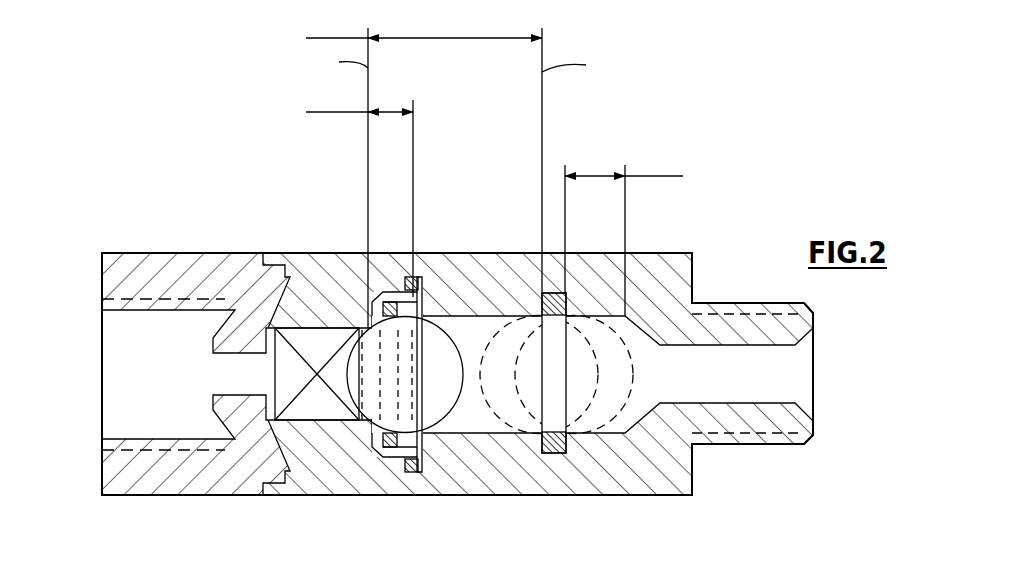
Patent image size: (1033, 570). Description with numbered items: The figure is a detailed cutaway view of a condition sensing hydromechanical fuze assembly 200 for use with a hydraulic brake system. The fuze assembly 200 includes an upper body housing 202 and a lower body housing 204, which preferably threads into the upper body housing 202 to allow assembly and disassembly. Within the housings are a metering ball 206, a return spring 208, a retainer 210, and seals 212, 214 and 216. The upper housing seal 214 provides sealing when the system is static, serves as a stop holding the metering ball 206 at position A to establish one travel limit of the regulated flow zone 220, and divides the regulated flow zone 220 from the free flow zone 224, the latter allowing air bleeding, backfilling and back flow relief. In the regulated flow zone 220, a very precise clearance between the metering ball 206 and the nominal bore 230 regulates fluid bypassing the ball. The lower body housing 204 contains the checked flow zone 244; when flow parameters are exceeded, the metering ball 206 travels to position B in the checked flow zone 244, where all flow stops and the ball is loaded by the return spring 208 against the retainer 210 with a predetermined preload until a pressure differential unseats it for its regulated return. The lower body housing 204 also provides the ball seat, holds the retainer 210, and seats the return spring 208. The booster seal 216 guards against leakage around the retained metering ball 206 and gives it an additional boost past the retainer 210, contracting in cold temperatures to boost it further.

The fuze assembly 200 is at (728, 112).
The upper body housing 202 is at (673, 495).
The lower body housing 204 is at (158, 495).
The metering ball 206 is at (462, 408).
The return spring 208 is at (328, 359).
The retainer 210 is at (420, 335).
The seal 212 is at (412, 472).
The upper housing seal 214 is at (567, 453).
The booster seal 216 is at (385, 300).
The regulated flow zone 220 is at (443, 36).
The free flow zone 224 is at (593, 175).
The nominal bore 230 is at (470, 327).
The checked flow zone 244 is at (393, 110).